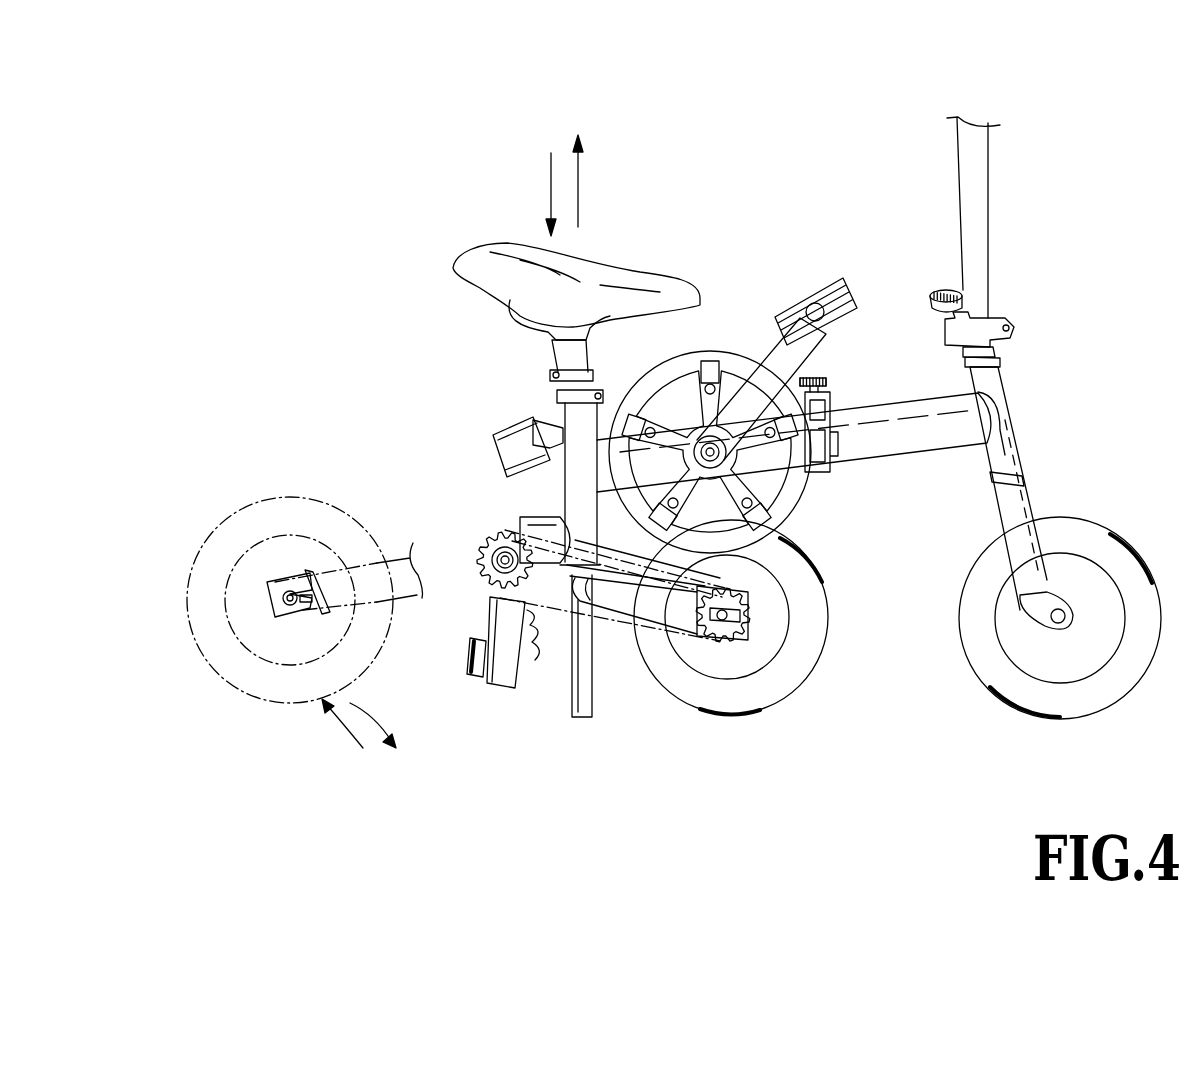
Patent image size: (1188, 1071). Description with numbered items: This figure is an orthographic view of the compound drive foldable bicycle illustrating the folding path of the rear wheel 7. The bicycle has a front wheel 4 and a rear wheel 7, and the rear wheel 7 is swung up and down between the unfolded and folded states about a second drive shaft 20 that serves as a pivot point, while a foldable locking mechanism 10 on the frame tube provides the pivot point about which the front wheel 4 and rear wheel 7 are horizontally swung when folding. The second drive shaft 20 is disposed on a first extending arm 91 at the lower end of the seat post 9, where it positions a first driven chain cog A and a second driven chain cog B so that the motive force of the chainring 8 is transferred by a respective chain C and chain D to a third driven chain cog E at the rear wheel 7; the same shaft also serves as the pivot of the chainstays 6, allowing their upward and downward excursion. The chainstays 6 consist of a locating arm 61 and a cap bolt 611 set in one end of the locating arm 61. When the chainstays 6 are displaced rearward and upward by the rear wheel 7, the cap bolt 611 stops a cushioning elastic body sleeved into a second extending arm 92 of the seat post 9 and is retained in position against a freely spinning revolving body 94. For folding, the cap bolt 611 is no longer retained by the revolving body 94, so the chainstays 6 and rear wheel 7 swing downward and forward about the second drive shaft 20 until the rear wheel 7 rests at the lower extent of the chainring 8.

The front wheel 4 is at (1127, 545).
The chainstays 6 is at (340, 558).
The rear wheel 7 is at (250, 540).
The chainring 8 is at (706, 360).
The seat post 9 is at (560, 445).
The foldable locking mechanism 10 is at (828, 475).
The second drive shaft 20 is at (483, 582).
The locating arm 61 is at (505, 663).
The cap bolt 611 is at (473, 660).
The first extending arm 91 is at (475, 530).
The second extending arm 92 is at (528, 440).
The revolving body 94 is at (493, 436).
The first driven chain cog A is at (478, 555).
The second driven chain cog B is at (492, 625).
The chain C is at (470, 482).
The chain D is at (654, 632).
The third driven chain cog E is at (713, 640).